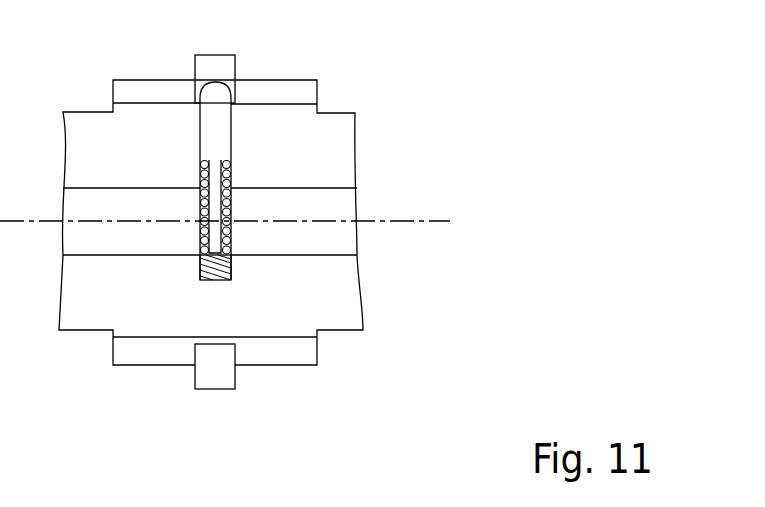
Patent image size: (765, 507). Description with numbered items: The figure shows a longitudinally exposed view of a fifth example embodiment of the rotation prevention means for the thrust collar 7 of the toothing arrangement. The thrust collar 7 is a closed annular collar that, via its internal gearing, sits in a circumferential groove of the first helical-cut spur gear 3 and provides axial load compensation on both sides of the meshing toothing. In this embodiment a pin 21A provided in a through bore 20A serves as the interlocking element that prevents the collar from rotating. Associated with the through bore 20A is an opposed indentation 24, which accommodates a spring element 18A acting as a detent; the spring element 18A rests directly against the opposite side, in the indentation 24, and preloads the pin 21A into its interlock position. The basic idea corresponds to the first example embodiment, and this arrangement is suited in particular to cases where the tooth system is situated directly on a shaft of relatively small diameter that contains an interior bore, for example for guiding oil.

The first helical-cut spur gear 3 is at (299, 97).
The thrust collar 7 is at (223, 70).
The spring element 18A is at (231, 232).
The through bore 20A is at (231, 173).
The pin 21A is at (213, 138).
The indentation 24 is at (222, 267).